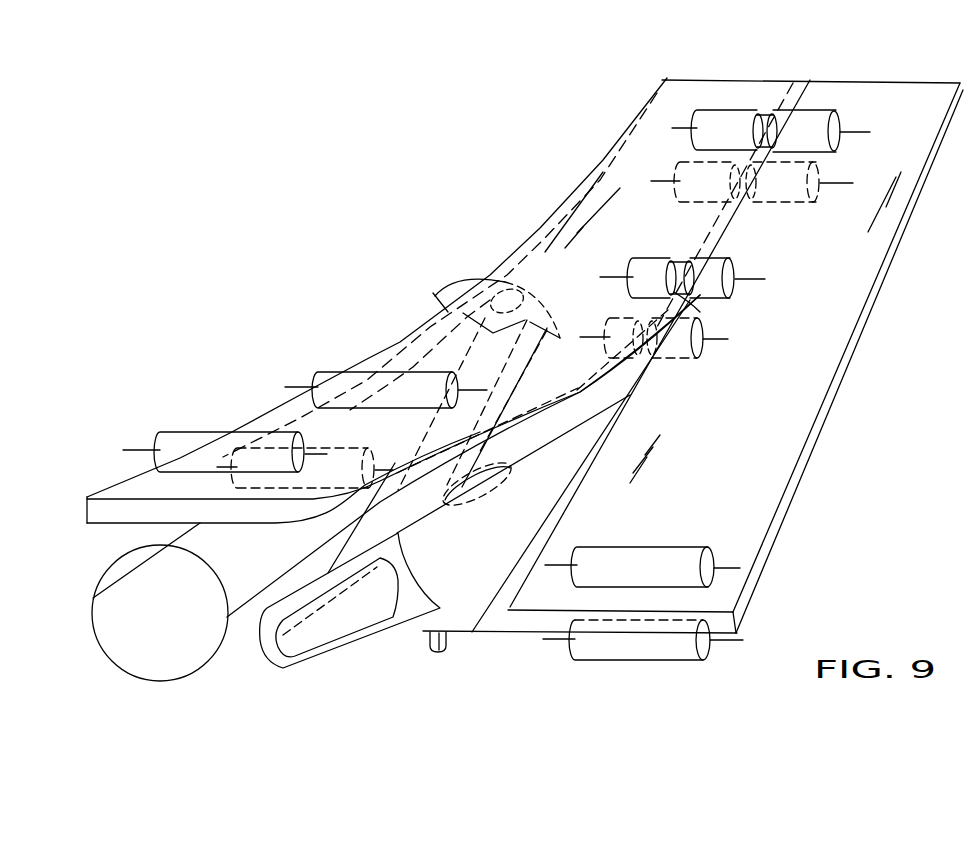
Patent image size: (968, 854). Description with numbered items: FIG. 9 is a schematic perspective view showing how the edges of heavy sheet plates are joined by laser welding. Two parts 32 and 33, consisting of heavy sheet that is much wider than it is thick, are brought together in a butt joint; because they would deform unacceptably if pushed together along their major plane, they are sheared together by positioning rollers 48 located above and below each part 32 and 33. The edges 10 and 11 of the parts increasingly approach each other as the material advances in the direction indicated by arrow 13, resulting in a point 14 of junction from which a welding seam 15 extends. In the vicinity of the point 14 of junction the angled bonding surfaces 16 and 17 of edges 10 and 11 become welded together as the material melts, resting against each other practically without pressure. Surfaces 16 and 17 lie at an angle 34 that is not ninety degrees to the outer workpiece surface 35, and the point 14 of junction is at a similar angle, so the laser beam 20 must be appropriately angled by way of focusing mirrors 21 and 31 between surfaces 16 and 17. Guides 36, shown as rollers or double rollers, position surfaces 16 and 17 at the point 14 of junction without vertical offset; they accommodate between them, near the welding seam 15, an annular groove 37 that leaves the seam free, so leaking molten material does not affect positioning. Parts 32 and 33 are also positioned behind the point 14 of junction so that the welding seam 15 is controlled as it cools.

The edge 10 is at (265, 517).
The edge 11 is at (500, 623).
The arrow 13 is at (690, 362).
The point of junction 14 is at (690, 305).
The welding seam 15 is at (818, 82).
The bonding surface 16 is at (403, 483).
The bonding surface 17 is at (517, 575).
The laser beam 20 is at (245, 622).
The focusing mirror 21 is at (457, 290).
The focusing mirror 31 is at (343, 650).
The part 32 is at (697, 92).
The part 33 is at (933, 100).
The angle 34 is at (450, 642).
The outer workpiece surface 35 is at (533, 634).
The guide 36 is at (818, 123).
The annular groove 37 is at (770, 112).
The positioning roller 48 is at (463, 392).